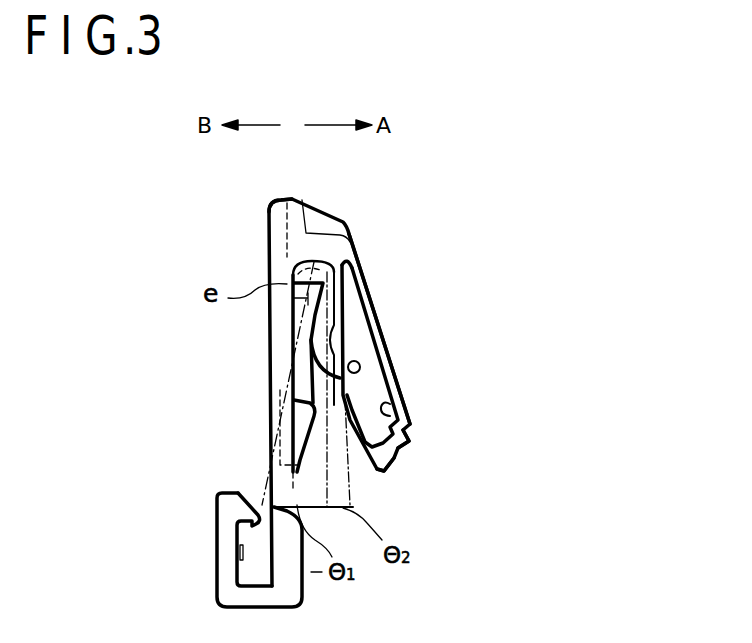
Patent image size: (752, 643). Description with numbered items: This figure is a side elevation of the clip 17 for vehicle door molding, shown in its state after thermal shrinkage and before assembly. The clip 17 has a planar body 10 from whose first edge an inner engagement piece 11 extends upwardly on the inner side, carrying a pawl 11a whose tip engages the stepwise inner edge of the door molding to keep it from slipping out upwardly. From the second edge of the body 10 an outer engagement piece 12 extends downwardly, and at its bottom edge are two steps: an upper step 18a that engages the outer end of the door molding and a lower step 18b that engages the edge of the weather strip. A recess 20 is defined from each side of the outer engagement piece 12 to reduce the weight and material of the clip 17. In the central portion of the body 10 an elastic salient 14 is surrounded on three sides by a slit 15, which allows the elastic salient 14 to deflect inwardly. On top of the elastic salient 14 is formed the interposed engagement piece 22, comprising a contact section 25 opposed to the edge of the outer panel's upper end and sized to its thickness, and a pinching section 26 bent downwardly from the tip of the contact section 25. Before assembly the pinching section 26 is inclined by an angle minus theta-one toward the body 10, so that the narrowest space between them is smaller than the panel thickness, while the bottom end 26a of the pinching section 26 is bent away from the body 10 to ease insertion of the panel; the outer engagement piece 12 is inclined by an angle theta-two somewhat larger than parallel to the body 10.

The planar body 10 is at (270, 329).
The inner engagement piece 11 is at (218, 575).
The pawl 11a is at (248, 526).
The outer engagement piece 12 is at (398, 378).
The elastic salient 14 is at (295, 405).
The slit 15 is at (290, 383).
The clip 17 is at (198, 241).
The upper step 18a is at (410, 438).
The lower step 18b is at (390, 455).
The recess 20 is at (395, 412).
The interposed engagement piece 22 is at (461, 230).
The contact section 25 is at (330, 257).
The pinching section 26 is at (330, 313).
The bottom end of pinching section 26a is at (358, 367).